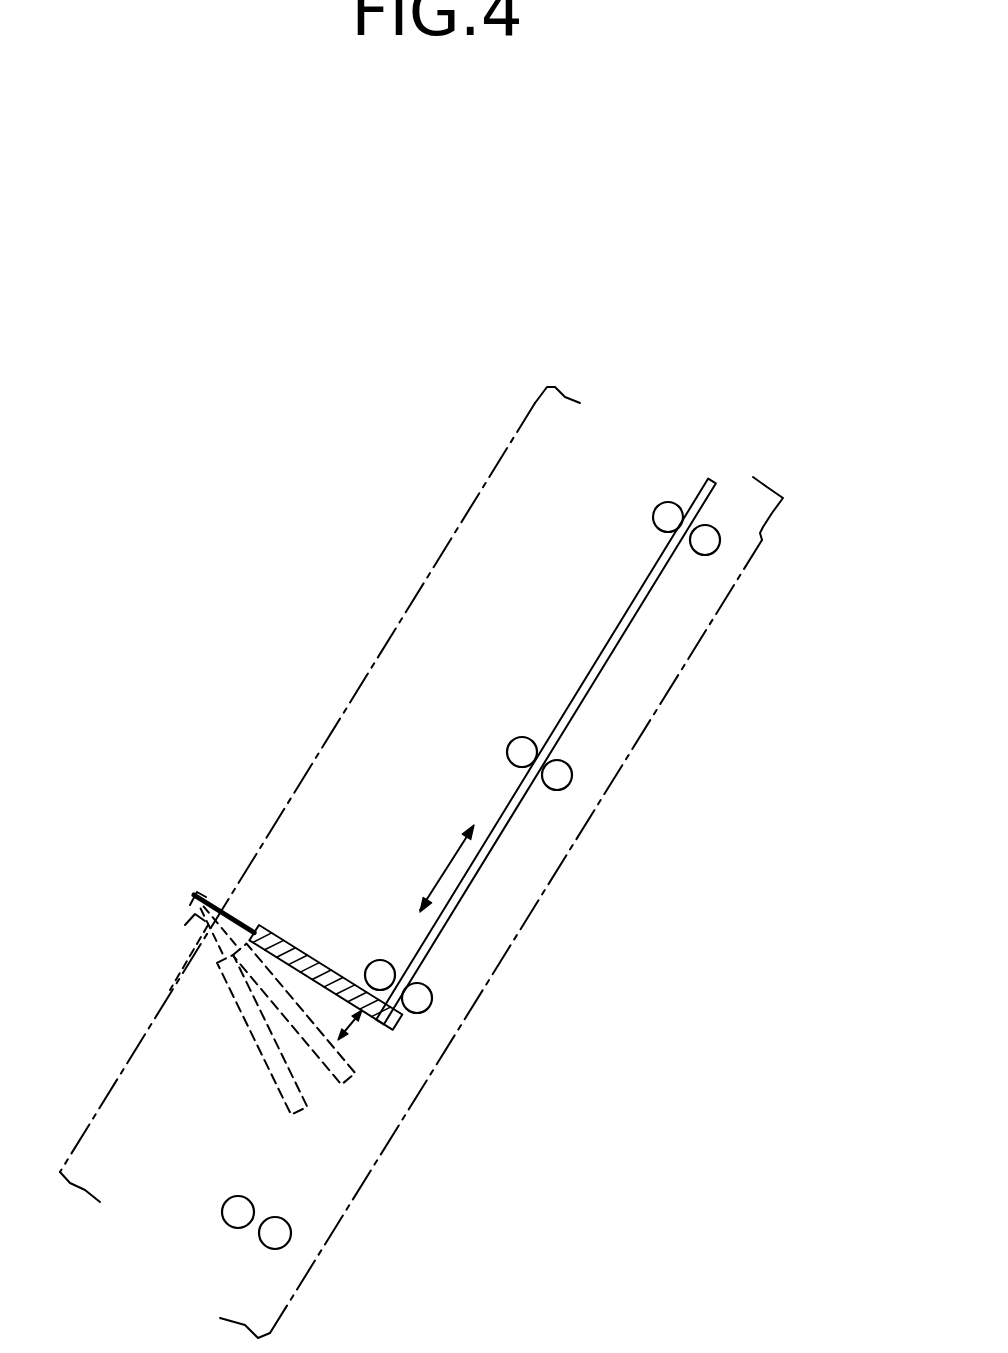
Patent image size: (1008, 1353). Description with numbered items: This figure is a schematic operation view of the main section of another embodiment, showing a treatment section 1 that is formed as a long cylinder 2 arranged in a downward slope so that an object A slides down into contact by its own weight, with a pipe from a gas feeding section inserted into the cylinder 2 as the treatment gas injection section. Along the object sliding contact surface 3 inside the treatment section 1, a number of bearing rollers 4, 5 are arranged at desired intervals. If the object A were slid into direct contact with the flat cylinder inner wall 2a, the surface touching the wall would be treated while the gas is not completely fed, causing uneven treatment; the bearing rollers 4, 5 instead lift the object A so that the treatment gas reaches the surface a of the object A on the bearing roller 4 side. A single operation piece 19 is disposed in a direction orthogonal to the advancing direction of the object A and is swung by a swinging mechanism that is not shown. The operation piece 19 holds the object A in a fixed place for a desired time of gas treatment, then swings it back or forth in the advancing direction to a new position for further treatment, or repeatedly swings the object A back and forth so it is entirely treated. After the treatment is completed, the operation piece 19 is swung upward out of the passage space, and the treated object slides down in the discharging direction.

The treatment section 1 is at (527, 400).
The cylinder 2 is at (485, 488).
The cylinder inner wall 2a is at (765, 540).
The object sliding contact surface 3 is at (690, 508).
The bearing rollers 4 is at (720, 551).
The bearing rollers 5 is at (667, 505).
The operation piece 19 is at (283, 935).
The object A is at (495, 863).
The surface a is at (425, 1010).